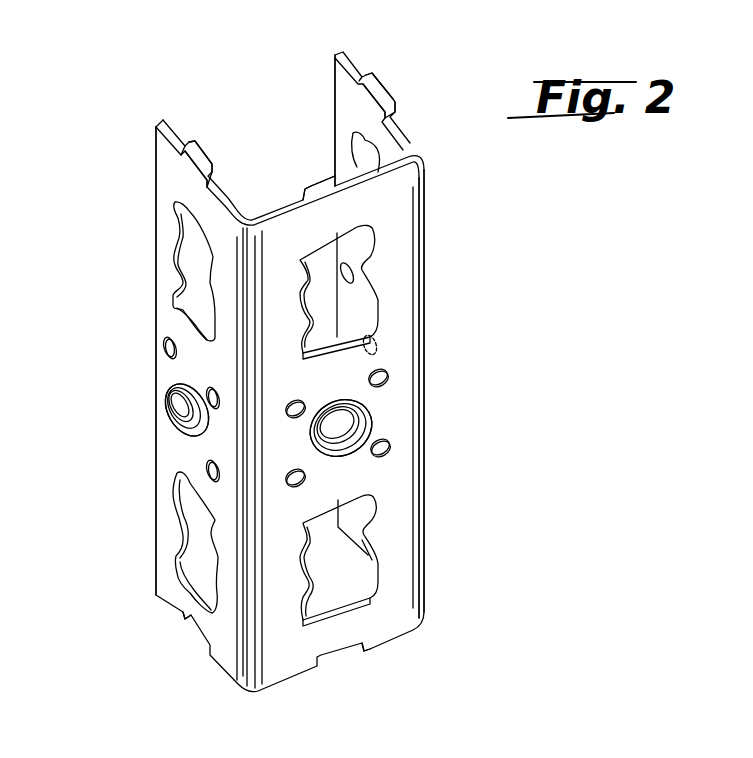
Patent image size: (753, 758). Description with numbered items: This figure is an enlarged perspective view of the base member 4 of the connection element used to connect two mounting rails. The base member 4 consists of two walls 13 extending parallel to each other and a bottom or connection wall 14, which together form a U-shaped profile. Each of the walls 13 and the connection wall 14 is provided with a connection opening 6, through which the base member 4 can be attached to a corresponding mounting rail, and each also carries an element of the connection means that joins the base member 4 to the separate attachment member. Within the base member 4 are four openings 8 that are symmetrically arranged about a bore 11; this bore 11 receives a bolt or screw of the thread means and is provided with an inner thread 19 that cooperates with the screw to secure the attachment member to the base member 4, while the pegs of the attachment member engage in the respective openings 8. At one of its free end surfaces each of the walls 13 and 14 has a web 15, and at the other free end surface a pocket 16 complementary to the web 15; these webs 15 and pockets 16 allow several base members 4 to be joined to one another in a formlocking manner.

The base member 4 is at (484, 518).
The connection opening 6 is at (187, 253).
The openings 8 is at (162, 346).
The bore 11 is at (270, 421).
The inner thread 19 is at (270, 421).
The walls 13 is at (347, 100).
The connection wall 14 is at (387, 207).
The web 15 is at (380, 88).
The pocket 16 is at (195, 632).